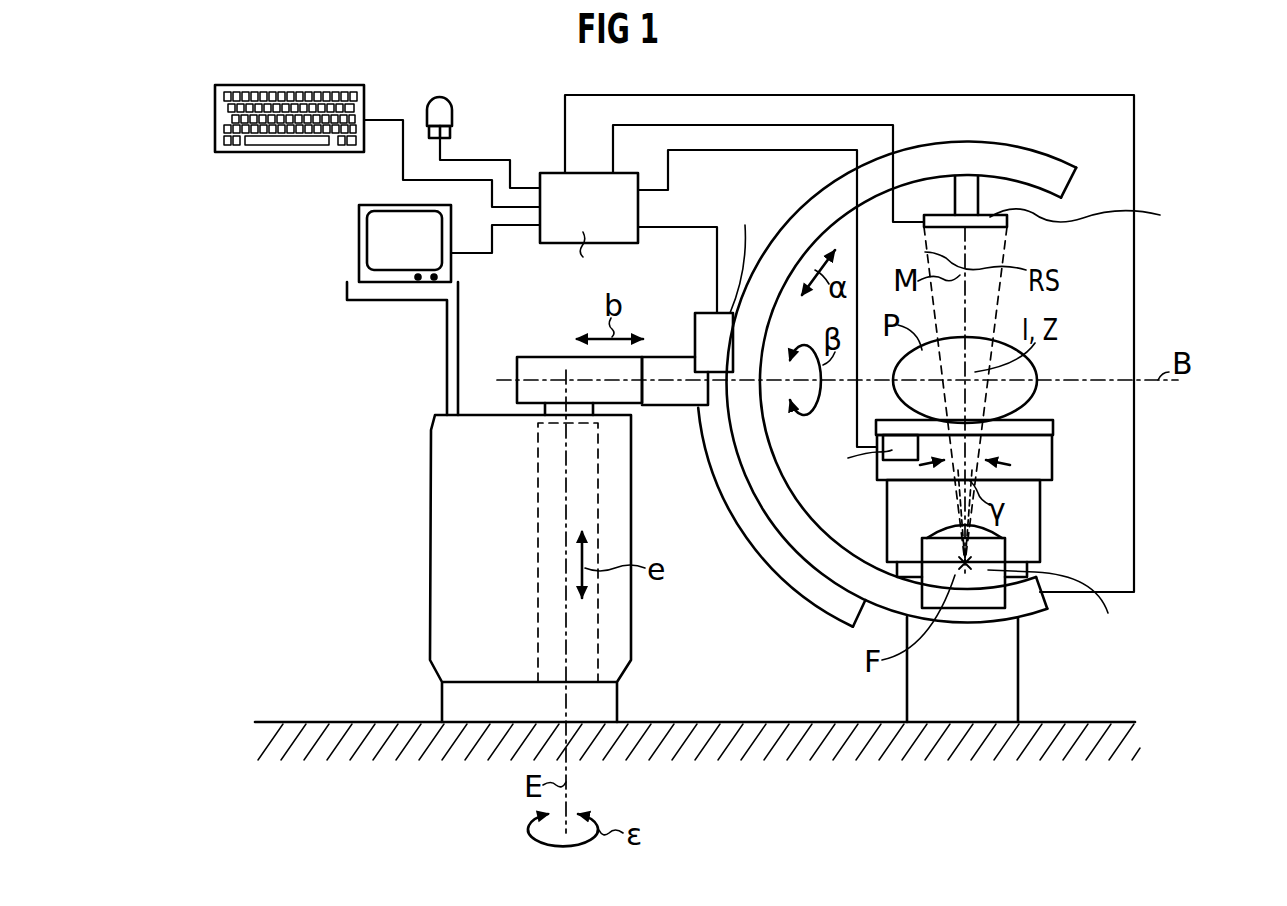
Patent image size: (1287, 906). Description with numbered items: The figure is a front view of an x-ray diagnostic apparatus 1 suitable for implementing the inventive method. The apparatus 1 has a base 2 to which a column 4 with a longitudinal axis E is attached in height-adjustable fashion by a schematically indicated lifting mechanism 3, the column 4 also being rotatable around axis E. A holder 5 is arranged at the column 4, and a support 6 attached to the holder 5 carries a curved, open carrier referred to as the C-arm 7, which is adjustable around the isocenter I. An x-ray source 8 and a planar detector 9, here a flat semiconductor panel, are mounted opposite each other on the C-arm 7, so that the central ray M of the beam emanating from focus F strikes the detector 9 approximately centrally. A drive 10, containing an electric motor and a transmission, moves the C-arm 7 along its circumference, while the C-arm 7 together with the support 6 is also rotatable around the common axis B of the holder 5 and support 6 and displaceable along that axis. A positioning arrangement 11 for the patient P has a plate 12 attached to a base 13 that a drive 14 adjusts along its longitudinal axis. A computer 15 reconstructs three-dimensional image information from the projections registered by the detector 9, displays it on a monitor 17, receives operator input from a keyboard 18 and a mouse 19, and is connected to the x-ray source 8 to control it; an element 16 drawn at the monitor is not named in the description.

The x-ray diagnostic apparatus 1 is at (412, 490).
The base 2 is at (445, 588).
The lifting mechanism 3 is at (582, 643).
The column 4 is at (590, 408).
The holder 5 is at (543, 359).
The support 6 is at (666, 359).
The C-arm 7 is at (820, 203).
The x-ray source 8 is at (985, 595).
The detector 9 is at (1010, 222).
The drive 10 is at (705, 313).
The positioning arrangement 11 is at (1050, 520).
The plate 12 is at (1055, 430).
The base 13 is at (1000, 693).
The drive 14 is at (900, 455).
The computer 15 is at (554, 173).
The monitor support 16 is at (447, 356).
The monitor 17 is at (359, 242).
The keyboard 18 is at (268, 153).
The mouse 19 is at (454, 108).